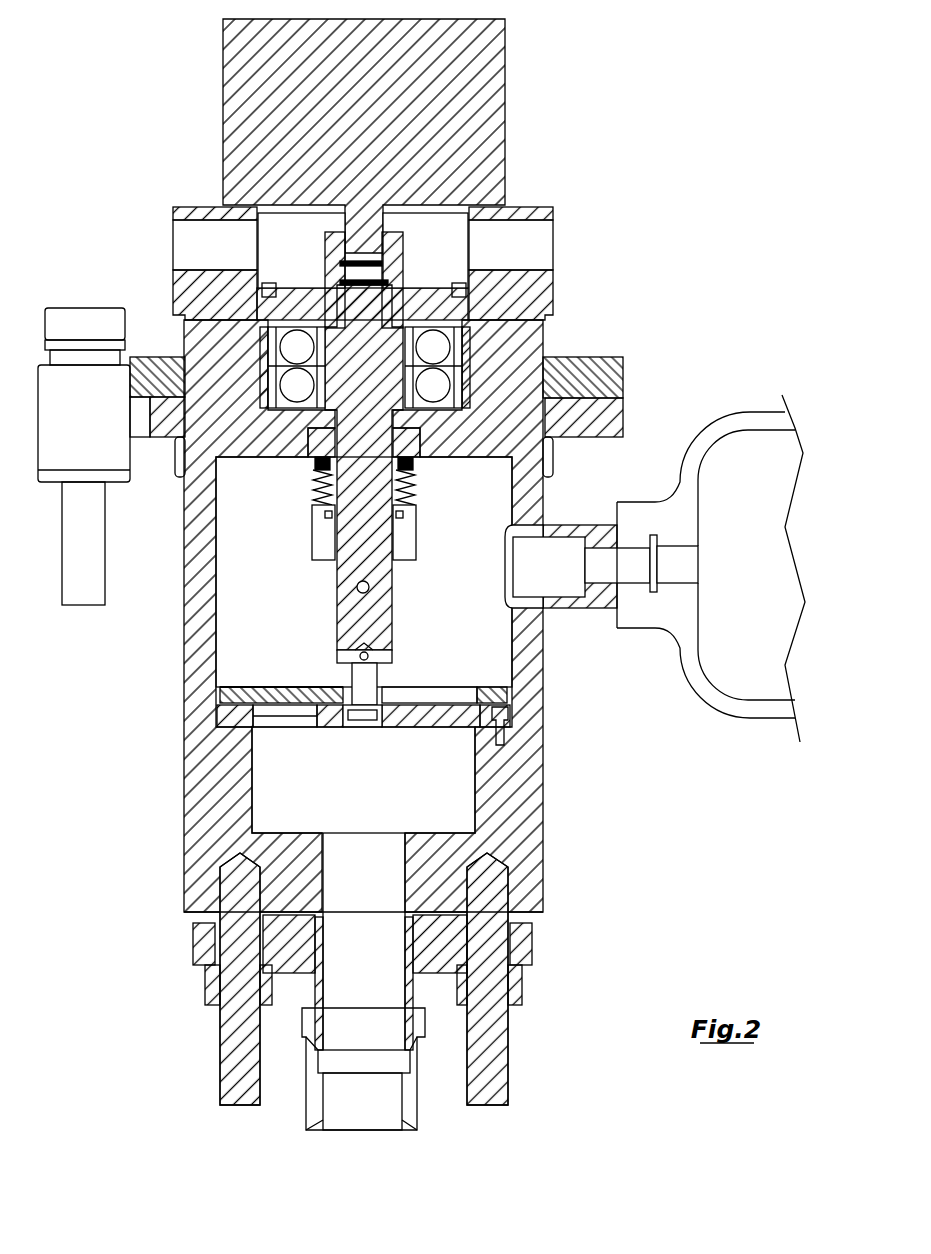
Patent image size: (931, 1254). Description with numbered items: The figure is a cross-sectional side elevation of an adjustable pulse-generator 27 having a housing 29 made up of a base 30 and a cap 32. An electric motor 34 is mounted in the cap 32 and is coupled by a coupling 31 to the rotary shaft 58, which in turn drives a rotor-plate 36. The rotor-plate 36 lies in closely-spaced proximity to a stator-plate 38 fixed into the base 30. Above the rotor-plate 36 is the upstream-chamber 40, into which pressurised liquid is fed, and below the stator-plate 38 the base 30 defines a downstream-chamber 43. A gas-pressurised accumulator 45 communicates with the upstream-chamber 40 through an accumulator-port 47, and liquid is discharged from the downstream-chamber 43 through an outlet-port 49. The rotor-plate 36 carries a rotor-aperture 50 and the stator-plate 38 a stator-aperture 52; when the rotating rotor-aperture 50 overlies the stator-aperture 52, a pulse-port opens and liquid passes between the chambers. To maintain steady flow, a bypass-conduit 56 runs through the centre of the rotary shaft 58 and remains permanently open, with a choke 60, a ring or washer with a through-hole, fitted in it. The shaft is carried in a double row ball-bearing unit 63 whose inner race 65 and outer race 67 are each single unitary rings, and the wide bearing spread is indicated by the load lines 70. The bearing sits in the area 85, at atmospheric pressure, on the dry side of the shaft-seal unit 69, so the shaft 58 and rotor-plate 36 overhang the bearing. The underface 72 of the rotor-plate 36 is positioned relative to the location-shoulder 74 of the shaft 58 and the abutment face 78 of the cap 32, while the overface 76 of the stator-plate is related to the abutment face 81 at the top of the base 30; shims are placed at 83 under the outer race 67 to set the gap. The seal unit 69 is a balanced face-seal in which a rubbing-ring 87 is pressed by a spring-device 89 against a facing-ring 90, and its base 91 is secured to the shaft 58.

The adjustable pulse-generator 27 is at (590, 218).
The housing 29 is at (552, 842).
The base 30 is at (525, 770).
The coupling 31 is at (312, 298).
The cap 32 is at (197, 285).
The electric motor 34 is at (488, 103).
The rotor-plate 36 is at (274, 690).
The stator-plate 38 is at (435, 717).
The upstream-chamber 40 is at (242, 607).
The downstream-chamber 43 is at (272, 799).
The gas-pressurised accumulator 45 is at (738, 678).
The accumulator-port 47 is at (562, 590).
The outlet-port 49 is at (352, 1004).
The rotor-aperture 50 is at (437, 695).
The stator-aperture 52 is at (300, 718).
The bypass-conduit 56 is at (362, 680).
The rotary shaft 58 is at (352, 604).
The choke 60 is at (355, 727).
The double row ball-bearing unit 63 is at (462, 355).
The inner race 65 is at (300, 275).
The outer race 67 is at (492, 300).
The rotary shaft-seal unit 69 is at (428, 527).
The load lines 70 is at (472, 360).
The underface 72 is at (278, 712).
The location-shoulder 74 is at (392, 675).
The overface 76 is at (452, 718).
The abutment face 78 is at (180, 470).
The abutment face 81 is at (612, 370).
The shim location 83 is at (268, 425).
The area 85 is at (432, 298).
The rubbing-ring 87 is at (318, 463).
The spring-device 89 is at (322, 490).
The facing-ring 90 is at (415, 460).
The base 91 is at (410, 558).